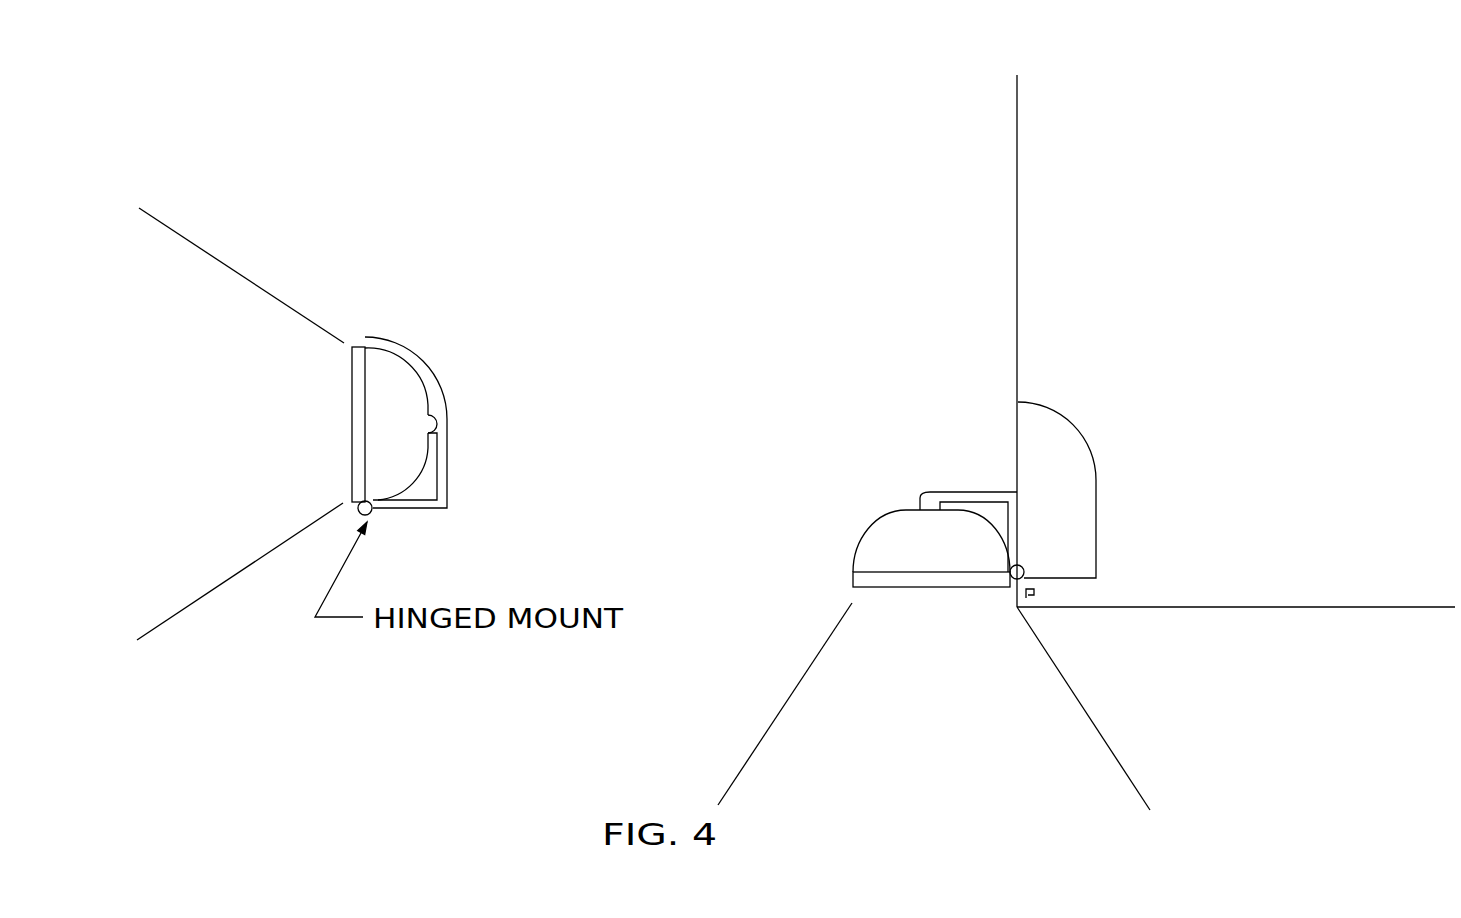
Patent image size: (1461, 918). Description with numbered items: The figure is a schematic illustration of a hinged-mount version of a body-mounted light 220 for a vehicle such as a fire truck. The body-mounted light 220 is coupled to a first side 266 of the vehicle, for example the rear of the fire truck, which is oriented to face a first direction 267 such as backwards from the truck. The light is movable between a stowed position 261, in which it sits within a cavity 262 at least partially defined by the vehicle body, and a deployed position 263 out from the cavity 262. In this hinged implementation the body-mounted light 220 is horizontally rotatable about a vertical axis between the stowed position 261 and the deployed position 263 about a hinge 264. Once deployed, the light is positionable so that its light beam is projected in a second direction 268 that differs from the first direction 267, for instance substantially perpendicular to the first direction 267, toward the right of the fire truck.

The body-mounted light 220 is at (408, 392).
The stowed position 261 is at (281, 316).
The cavity 262 is at (440, 400).
The deployed position 263 is at (845, 608).
The hinge 264 is at (1032, 598).
The first side 266 is at (1151, 333).
The first direction 267 is at (1017, 232).
The second direction 268 is at (932, 622).